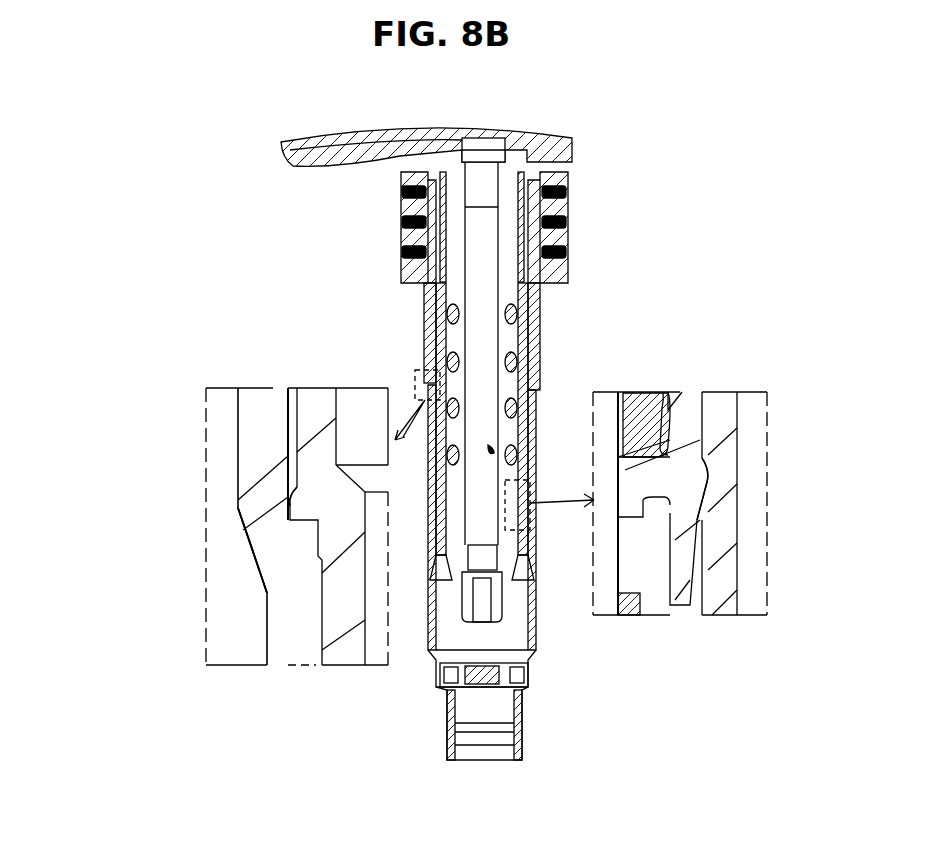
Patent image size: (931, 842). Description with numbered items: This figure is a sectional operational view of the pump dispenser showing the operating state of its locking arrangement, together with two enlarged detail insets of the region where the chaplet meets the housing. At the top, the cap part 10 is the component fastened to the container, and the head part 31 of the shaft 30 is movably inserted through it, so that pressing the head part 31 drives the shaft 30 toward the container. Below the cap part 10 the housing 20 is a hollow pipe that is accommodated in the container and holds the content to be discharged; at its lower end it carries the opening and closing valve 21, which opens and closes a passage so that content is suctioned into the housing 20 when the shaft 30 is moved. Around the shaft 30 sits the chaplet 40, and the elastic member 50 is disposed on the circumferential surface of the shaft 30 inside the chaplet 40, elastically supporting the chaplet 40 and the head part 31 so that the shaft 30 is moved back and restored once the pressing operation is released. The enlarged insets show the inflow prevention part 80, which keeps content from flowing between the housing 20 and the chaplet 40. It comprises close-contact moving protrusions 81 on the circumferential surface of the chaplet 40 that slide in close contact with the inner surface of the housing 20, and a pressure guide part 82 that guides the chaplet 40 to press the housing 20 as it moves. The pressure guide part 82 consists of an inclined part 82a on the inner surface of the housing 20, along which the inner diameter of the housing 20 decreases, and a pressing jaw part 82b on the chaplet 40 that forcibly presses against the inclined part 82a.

The cap part 10 is at (568, 212).
The housing 20 is at (530, 620).
The opening and closing valve 21 is at (520, 672).
The shaft 30 is at (528, 306).
The head part 31 is at (449, 134).
The chaplet 40 is at (540, 340).
The elastic member 50 is at (520, 356).
The inflow prevention part 80 is at (92, 562).
The close-contact moving protrusion 81 is at (302, 502).
The pressure guide part 82 is at (150, 586).
The inclined part 82a is at (310, 537).
The pressing jaw part 82b is at (320, 568).